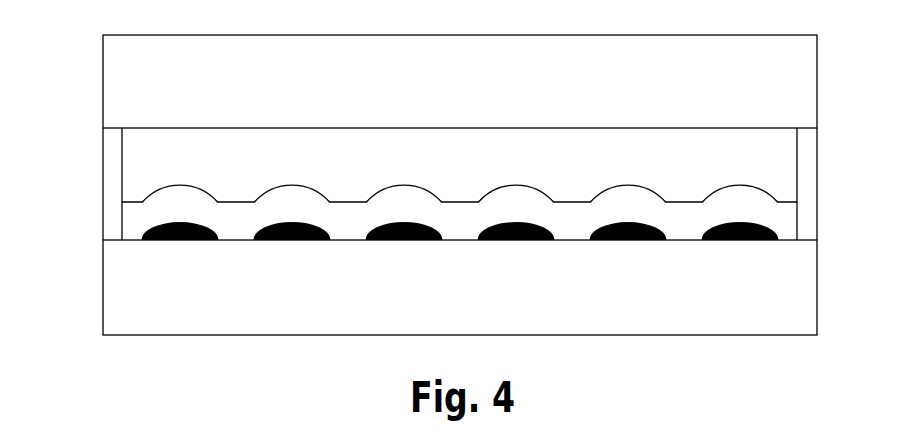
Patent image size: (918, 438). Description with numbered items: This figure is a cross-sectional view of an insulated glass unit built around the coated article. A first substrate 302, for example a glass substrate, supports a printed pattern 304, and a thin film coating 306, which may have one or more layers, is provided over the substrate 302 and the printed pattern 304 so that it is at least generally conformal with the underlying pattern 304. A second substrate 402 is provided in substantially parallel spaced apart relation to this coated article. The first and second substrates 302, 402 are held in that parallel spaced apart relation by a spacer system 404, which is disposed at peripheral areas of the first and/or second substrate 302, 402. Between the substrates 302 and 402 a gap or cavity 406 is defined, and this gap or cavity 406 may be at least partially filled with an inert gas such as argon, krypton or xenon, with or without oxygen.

The substrate 302 is at (103, 289).
The printed pattern 304 is at (380, 233).
The thin film coating 306 is at (140, 213).
The second substrate 402 is at (103, 82).
The spacer system 404 is at (817, 185).
The gap or cavity 406 is at (470, 174).